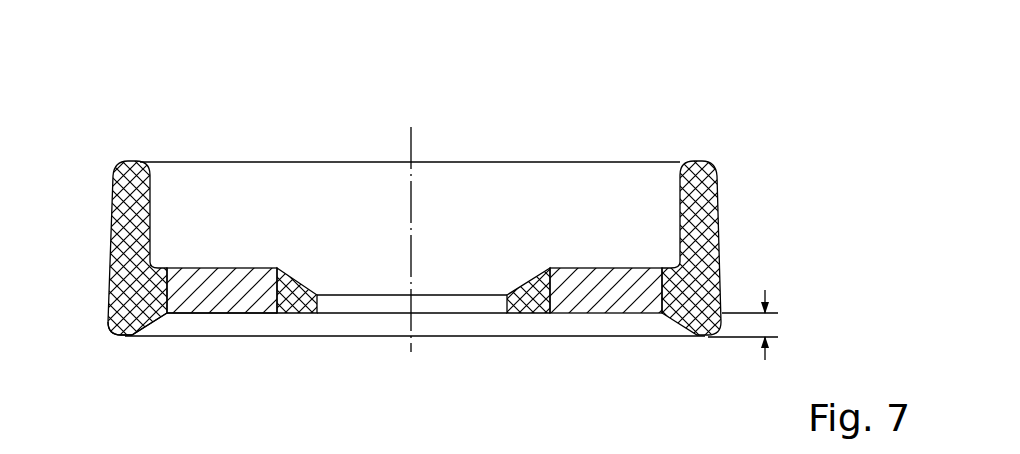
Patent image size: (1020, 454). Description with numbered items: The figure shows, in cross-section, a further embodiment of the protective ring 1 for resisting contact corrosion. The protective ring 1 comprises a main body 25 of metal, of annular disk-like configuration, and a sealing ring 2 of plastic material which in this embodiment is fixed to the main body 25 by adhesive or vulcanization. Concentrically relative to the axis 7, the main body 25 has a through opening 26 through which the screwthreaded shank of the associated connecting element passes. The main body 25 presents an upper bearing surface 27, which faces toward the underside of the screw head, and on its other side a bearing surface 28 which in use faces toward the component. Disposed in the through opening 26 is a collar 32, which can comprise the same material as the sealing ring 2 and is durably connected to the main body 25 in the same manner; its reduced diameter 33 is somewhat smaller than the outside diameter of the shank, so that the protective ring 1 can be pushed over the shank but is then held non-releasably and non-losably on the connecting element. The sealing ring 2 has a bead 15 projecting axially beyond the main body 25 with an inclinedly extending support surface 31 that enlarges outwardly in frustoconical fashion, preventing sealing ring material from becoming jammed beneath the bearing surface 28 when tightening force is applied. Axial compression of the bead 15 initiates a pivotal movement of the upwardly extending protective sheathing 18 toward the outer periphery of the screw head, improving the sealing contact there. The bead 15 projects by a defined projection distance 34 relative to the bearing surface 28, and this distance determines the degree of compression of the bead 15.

The protective ring 1 is at (747, 143).
The sealing ring 2 is at (700, 193).
The axis 7 is at (412, 147).
The bead 15 is at (121, 329).
The protective sheathing 18 is at (120, 168).
The main body 25 is at (612, 293).
The through opening 26 is at (567, 297).
The upper bearing surface 27 is at (217, 268).
The bearing surface 28 is at (230, 313).
The support surface 31 is at (150, 326).
The collar 32 is at (298, 307).
The reduced diameter 33 is at (320, 304).
The projection distance 34 is at (763, 323).